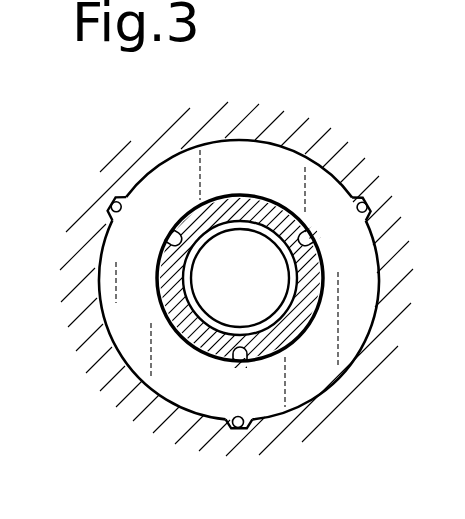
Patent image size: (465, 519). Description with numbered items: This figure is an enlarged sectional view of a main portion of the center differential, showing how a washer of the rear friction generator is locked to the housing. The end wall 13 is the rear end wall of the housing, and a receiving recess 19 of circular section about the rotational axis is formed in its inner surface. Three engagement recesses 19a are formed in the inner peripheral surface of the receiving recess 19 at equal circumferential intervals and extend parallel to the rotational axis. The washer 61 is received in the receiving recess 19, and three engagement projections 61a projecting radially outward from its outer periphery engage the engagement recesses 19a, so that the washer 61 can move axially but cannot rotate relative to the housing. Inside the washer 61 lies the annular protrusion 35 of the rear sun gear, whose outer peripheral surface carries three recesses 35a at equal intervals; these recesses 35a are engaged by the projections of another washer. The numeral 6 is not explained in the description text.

The shaft 6 is at (325, 266).
The end wall 13 is at (304, 140).
The receiving recess 19 is at (338, 182).
The engagement recesses 19a is at (110, 208).
The annular protrusion 35 is at (238, 205).
The recesses 35a is at (177, 242).
The washer 61 is at (352, 292).
The engagement projections 61a is at (117, 198).